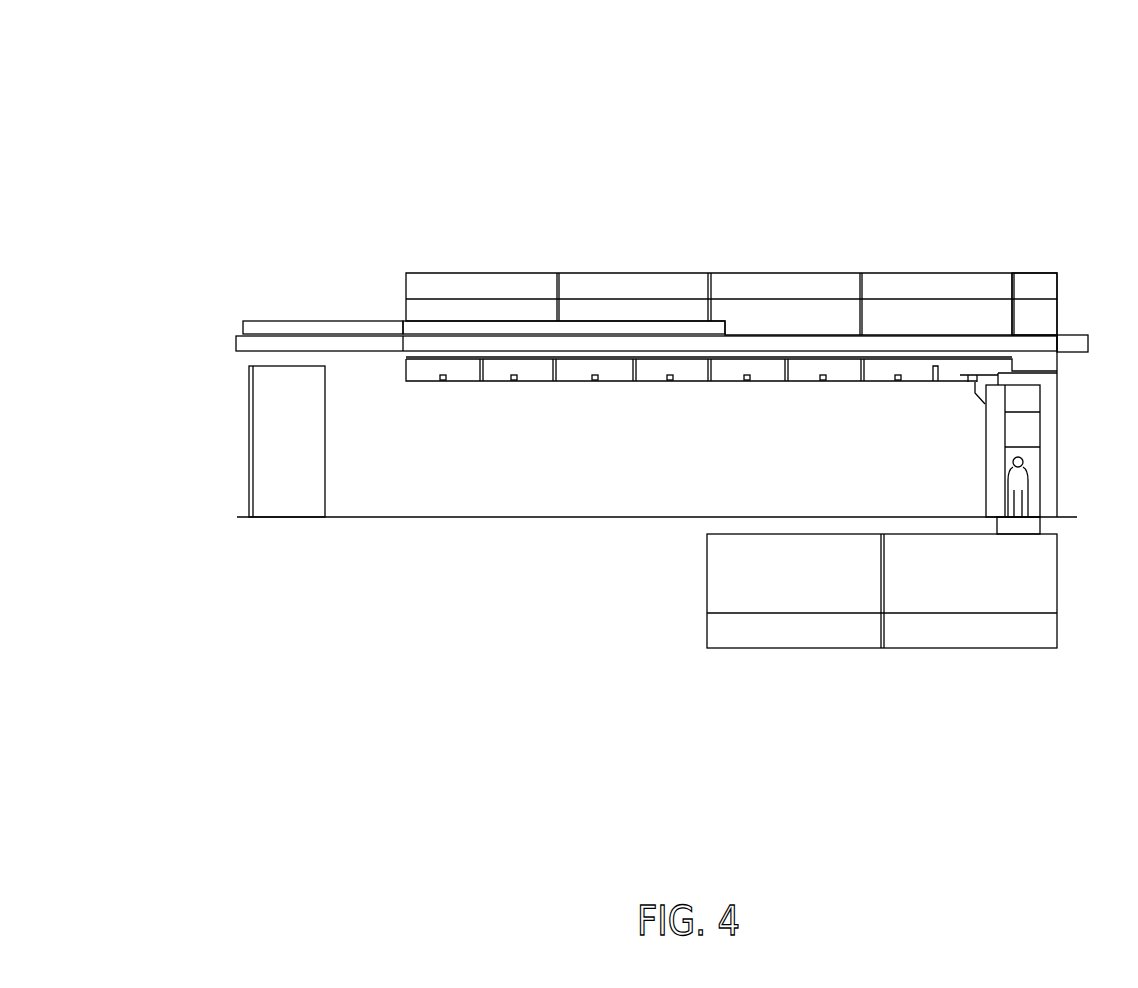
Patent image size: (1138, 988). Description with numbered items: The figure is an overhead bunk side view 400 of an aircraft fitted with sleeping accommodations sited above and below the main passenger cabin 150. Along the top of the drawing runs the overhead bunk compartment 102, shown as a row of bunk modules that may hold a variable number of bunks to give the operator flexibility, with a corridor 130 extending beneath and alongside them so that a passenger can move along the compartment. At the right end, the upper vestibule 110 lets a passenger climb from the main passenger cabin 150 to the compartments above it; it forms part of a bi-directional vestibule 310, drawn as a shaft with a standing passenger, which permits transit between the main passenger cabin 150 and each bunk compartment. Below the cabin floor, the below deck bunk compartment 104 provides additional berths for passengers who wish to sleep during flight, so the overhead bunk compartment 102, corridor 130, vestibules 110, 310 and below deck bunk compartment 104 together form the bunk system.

The overhead bunk side view 400 is at (60, 121).
The overhead bunk compartment 102 is at (450, 289).
The corridor 130 is at (655, 342).
The upper vestibule 110 is at (1035, 310).
The main passenger cabin 150 is at (385, 416).
The bi-directional vestibule 310 is at (1024, 439).
The below deck bunk compartment 104 is at (724, 573).